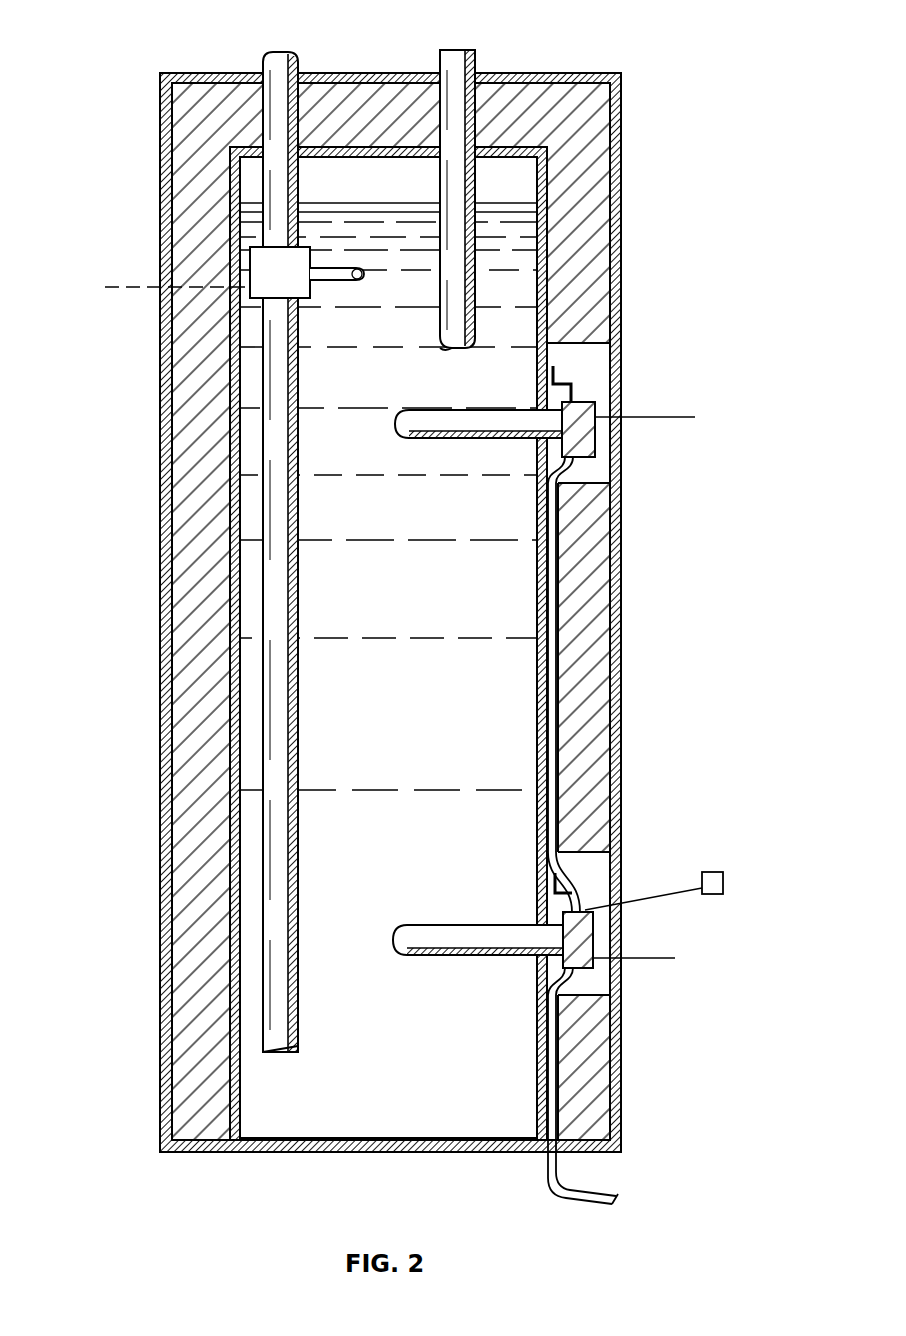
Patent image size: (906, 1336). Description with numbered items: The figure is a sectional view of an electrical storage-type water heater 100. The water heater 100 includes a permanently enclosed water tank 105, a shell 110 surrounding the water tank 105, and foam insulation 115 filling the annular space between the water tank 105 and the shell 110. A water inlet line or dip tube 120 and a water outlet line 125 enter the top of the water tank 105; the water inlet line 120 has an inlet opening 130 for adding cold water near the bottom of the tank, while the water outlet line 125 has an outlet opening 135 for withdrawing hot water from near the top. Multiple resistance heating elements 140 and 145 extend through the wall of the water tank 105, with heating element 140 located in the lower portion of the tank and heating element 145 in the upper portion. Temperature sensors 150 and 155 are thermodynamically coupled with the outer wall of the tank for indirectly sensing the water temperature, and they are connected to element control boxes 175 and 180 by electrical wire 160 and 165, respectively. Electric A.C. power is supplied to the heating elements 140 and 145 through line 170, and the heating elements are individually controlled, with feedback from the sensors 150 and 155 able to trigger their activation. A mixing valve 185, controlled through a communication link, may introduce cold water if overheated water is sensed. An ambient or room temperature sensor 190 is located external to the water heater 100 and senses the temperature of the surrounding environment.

The water heater 100 is at (655, 209).
The water tank 105 is at (248, 447).
The shell 110 is at (621, 118).
The foam insulation 115 is at (190, 153).
The water inlet line 120 is at (284, 52).
The water outlet line 125 is at (460, 52).
The inlet opening 130 is at (274, 1052).
The outlet opening 135 is at (450, 349).
The resistance heating element 140 is at (442, 935).
The resistance heating element 145 is at (482, 420).
The temperature sensor 150 is at (553, 885).
The temperature sensor 155 is at (556, 365).
The electrical wire 160 is at (573, 384).
The electrical wire 165 is at (643, 885).
The line 170 is at (556, 650).
The element control box 175 is at (585, 930).
The element control box 180 is at (595, 449).
The mixing valve 185 is at (312, 250).
The ambient temperature sensor 190 is at (718, 871).